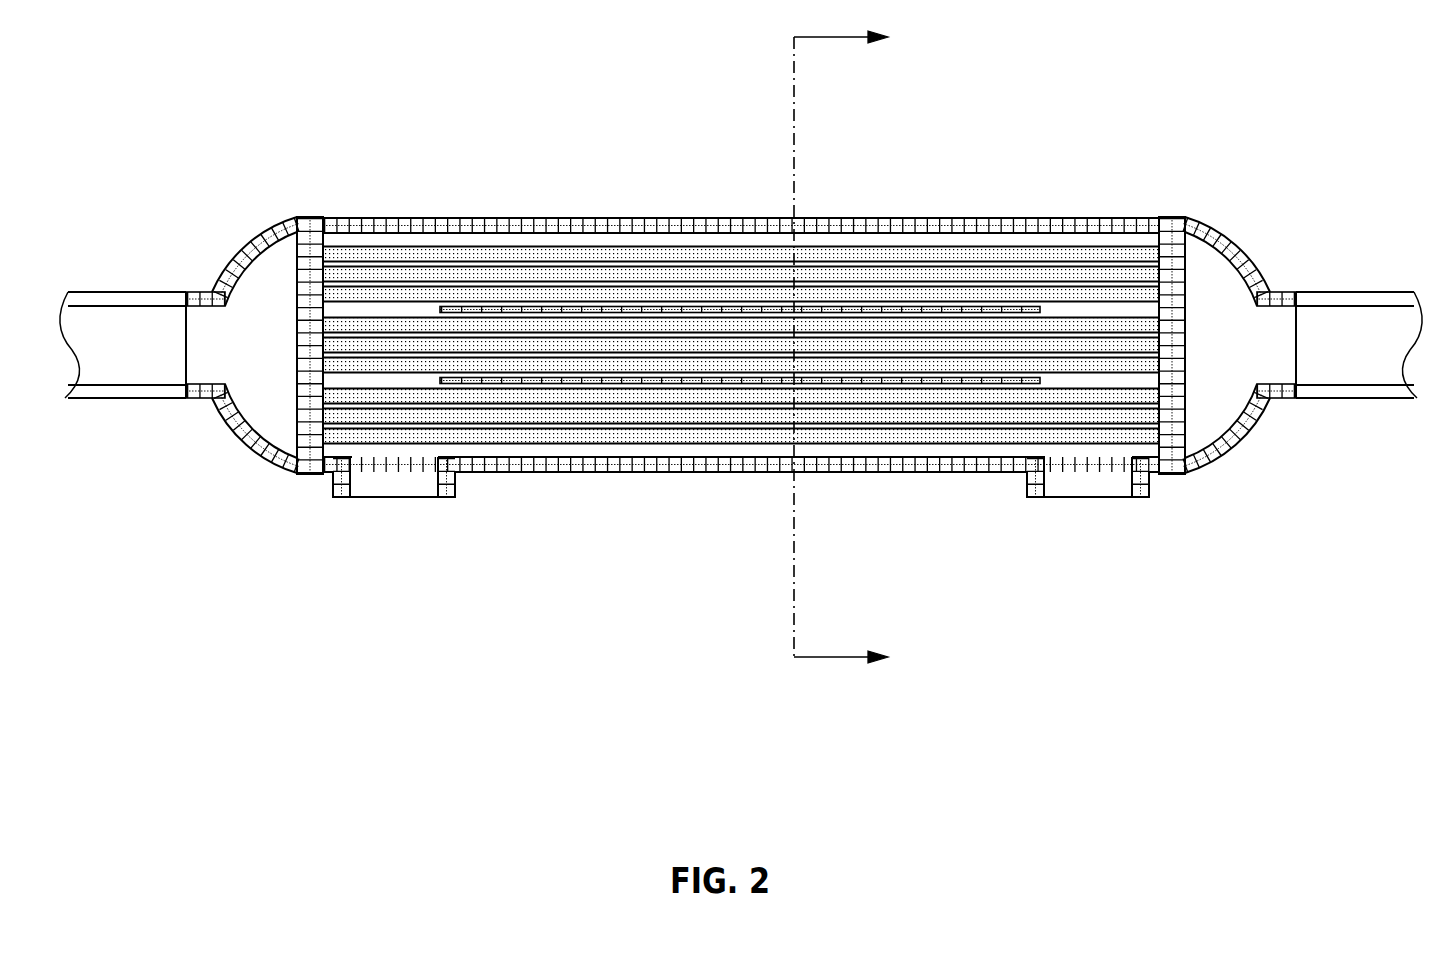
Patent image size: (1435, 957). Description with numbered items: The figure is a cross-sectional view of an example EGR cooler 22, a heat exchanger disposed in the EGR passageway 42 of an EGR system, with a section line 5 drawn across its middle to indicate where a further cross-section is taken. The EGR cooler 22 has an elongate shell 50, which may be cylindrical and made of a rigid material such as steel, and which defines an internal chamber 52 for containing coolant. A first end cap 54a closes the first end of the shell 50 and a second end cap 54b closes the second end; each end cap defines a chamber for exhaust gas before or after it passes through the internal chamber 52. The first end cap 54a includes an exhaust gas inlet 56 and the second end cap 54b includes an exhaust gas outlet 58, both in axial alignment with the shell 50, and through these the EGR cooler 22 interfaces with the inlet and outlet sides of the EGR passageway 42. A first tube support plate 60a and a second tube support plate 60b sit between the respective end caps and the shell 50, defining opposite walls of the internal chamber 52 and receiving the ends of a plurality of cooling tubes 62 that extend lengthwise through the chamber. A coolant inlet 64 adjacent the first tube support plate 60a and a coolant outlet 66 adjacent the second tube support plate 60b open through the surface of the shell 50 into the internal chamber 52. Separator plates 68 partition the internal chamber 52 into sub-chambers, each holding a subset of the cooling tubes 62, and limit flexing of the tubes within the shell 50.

The section line 5- 5 is at (851, 347).
The EGR cooler 22 is at (690, 188).
The EGR passageway 42 is at (126, 317).
The shell 50 is at (537, 228).
The internal chamber 52 is at (741, 280).
The first end cap 54a is at (238, 262).
The second end cap 54b is at (1218, 233).
The exhaust gas inlet 56 is at (208, 365).
The exhaust gas outlet 58 is at (1277, 367).
The first tube support plate 60a is at (312, 218).
The second tube support plate 60b is at (1174, 218).
The cooling tubes 62 is at (877, 323).
The coolant inlet 64 is at (400, 485).
The coolant outlet 66 is at (1107, 490).
The separator plate 68 is at (543, 382).